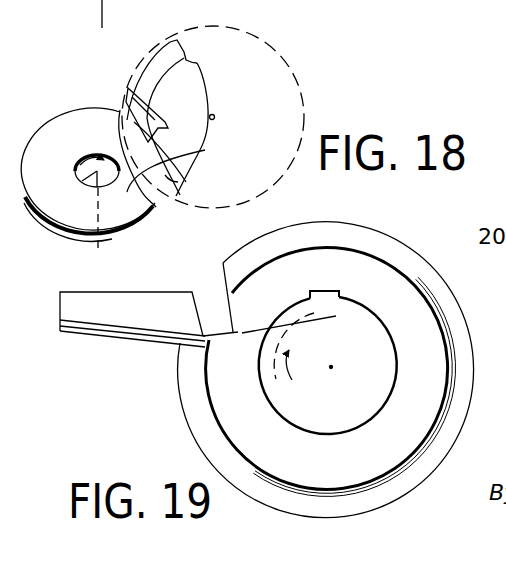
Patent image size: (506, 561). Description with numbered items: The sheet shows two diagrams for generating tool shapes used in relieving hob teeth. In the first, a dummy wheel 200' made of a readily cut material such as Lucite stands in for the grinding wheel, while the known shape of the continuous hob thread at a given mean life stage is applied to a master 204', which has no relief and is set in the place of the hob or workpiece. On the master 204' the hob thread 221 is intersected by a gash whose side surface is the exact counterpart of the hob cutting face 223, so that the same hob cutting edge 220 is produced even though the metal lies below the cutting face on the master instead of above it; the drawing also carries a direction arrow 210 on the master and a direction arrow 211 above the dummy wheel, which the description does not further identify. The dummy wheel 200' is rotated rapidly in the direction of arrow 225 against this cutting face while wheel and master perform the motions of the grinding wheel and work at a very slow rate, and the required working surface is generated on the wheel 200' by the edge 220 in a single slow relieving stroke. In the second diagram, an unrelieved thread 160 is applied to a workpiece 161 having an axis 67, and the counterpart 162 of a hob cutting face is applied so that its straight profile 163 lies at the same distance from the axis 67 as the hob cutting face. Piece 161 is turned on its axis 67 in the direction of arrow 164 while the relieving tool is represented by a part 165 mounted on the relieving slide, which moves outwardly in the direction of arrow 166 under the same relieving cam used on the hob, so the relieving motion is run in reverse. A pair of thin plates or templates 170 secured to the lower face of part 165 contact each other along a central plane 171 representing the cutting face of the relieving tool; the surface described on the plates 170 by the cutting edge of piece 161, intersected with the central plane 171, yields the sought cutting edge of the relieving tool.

In FIG. 18, the master 204' is at (223, 114).
In FIG. 18, the dummy wheel 200' is at (104, 180).
In FIG. 18, the arrow 225 is at (84, 160).
In FIG. 18, the direction of rotation 211 is at (110, 140).
In FIG. 18, the cutting face 223 is at (148, 181).
In FIG. 18, the lever arm 210 is at (188, 132).
In FIG. 18, the hob cutting edge 220 is at (197, 142).
In FIG. 18, the hob thread 221 is at (178, 182).
In FIG. 19, the unrelieved thread 160 is at (380, 248).
In FIG. 19, the workpiece 161 is at (320, 461).
In FIG. 19, the counterpart of a hob cutting face 162 is at (218, 329).
In FIG. 19, the straight profile 163 is at (277, 319).
In FIG. 19, the arrow 164 is at (291, 372).
In FIG. 19, the axis 67 is at (338, 360).
In FIG. 19, the part 165 is at (73, 302).
In FIG. 19, the thin plates or templates 170 is at (132, 330).
In FIG. 19, the central plane 171 is at (80, 330).
In FIG. 19, the arrow 166 is at (112, 282).